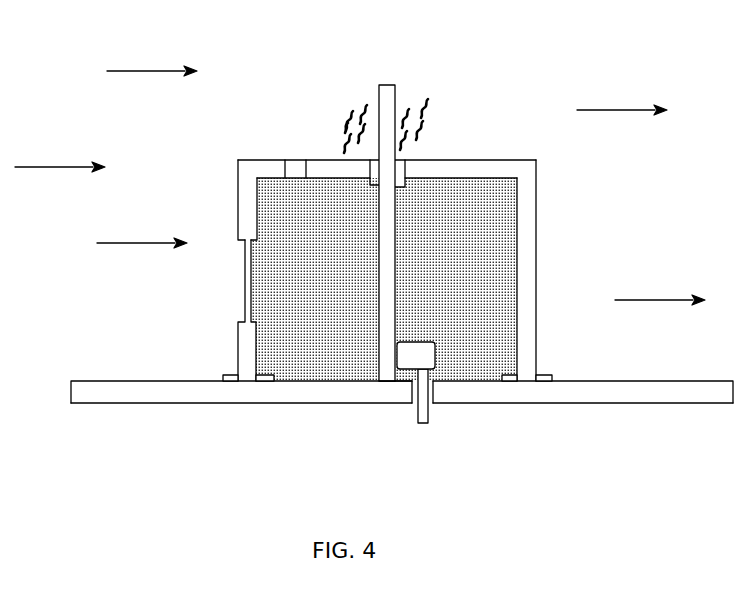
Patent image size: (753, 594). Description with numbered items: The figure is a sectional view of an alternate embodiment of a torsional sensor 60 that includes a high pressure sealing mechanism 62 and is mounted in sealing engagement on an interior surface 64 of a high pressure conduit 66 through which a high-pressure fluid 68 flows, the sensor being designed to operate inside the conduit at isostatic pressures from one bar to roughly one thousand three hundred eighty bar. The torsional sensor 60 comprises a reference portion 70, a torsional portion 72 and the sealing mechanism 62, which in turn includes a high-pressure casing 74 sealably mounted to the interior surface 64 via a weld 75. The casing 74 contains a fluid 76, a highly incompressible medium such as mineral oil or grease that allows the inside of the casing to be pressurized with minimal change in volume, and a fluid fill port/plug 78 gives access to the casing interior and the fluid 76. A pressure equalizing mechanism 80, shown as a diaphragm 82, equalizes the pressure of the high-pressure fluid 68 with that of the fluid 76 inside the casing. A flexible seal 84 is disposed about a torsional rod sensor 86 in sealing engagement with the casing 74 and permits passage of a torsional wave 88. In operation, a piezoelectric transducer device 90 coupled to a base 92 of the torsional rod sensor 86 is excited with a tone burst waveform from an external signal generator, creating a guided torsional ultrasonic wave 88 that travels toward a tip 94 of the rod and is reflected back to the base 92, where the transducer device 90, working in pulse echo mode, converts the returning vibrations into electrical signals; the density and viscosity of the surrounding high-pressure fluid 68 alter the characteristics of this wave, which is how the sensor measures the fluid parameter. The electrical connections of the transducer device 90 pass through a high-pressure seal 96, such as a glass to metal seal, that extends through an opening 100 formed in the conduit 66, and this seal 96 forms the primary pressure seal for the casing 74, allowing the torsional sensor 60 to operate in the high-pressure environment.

The torsional sensor 60 is at (545, 82).
The high pressure sealing mechanism 62 is at (558, 188).
The interior surface 64 is at (137, 381).
The high pressure conduit 66 is at (137, 403).
The high-pressure fluid 68 is at (620, 109).
The reference portion 70 is at (451, 347).
The torsional portion 72 is at (363, 110).
The high-pressure casing 74 is at (537, 243).
The weld 75 is at (225, 374).
The fluid 76 is at (257, 211).
The fluid fill port/plug 78 is at (290, 158).
The pressure equalizing mechanism 80 is at (222, 271).
The diaphragm 82 is at (247, 287).
The flexible seal 84 is at (400, 172).
The torsional rod sensor 86 is at (391, 114).
The torsional wave 88 is at (345, 150).
The transducer device 90 is at (406, 381).
The base 92 is at (385, 383).
The tip 94 is at (387, 85).
The high-pressure seal 96 is at (433, 392).
The opening 100 is at (413, 407).